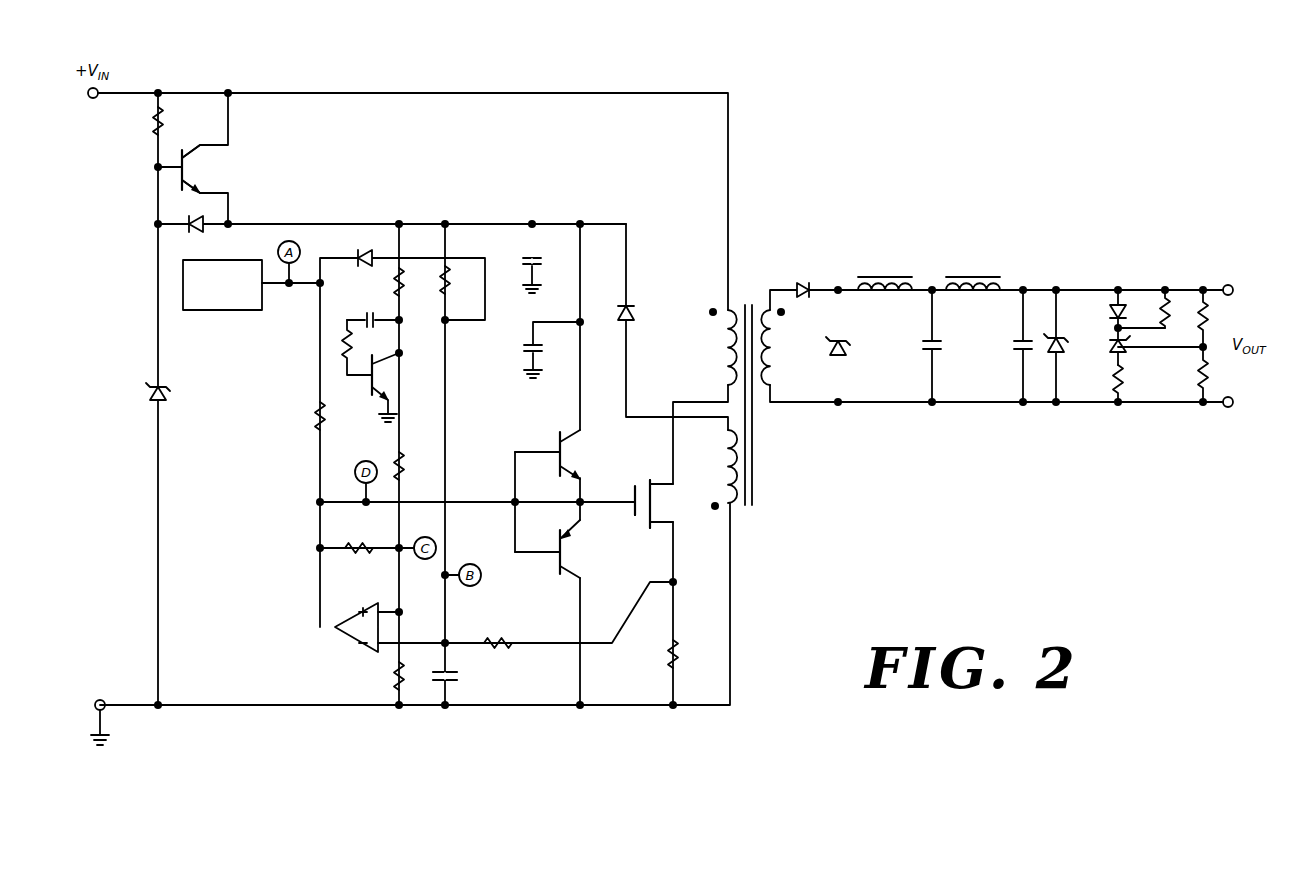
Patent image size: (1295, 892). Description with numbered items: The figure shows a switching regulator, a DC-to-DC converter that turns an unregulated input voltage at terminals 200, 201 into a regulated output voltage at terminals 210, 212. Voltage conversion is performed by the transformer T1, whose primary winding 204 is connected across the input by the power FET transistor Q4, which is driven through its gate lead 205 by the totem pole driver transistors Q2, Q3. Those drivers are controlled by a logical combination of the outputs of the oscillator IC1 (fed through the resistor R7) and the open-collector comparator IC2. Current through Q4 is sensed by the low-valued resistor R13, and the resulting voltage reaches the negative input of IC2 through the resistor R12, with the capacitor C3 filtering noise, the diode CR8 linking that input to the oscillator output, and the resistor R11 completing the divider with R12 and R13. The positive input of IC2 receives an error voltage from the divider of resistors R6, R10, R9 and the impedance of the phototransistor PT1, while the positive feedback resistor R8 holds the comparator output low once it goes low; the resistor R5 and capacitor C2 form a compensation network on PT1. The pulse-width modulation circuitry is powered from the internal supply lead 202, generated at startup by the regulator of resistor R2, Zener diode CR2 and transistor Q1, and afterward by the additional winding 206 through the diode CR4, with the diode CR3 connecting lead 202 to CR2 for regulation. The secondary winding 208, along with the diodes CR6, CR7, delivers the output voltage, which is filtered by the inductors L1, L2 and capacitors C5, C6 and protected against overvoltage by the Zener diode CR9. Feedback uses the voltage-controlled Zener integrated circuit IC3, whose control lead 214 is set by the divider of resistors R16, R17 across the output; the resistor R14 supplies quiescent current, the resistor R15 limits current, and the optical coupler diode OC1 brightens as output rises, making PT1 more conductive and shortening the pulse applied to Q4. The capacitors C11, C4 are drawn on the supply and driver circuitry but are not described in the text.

The input terminal 200 is at (93, 99).
The input terminal 201 is at (100, 700).
The internal supply lead 202 is at (292, 224).
The primary winding 204 is at (728, 352).
The gate lead 205 is at (628, 500).
The additional winding 206 is at (728, 466).
The transformer secondary winding 208 is at (762, 296).
The output voltage terminal 210 is at (1232, 286).
The output voltage terminal 212 is at (1230, 408).
The control lead 214 is at (1170, 352).
The resistor R2 is at (160, 132).
The transistor Q1 is at (193, 169).
The diode CR3 is at (178, 222).
The Zener diode CR2 is at (176, 391).
The oscillator IC1 is at (222, 297).
The diode CR8 is at (355, 250).
The resistor R6 is at (394, 282).
The resistor R11 is at (455, 292).
The capacitor C2 is at (373, 311).
The resistor R5 is at (343, 350).
The phototransistor PT1 is at (382, 382).
The resistor R7 is at (316, 414).
The resistor R10 is at (406, 470).
The positive feedback resistor R8 is at (368, 542).
The comparator IC2 is at (348, 610).
The resistor R9 is at (387, 677).
The capacitor C3 is at (461, 679).
The resistor R12 is at (499, 633).
The capacitor C11 is at (516, 260).
The capacitor C4 is at (552, 350).
The diode CR4 is at (643, 310).
The driver transistor Q2 is at (556, 455).
The driver transistor Q3 is at (556, 549).
The power FET transistor Q4 is at (663, 504).
The resistor R13 is at (682, 660).
The transformer T1 is at (743, 384).
The rectifier diode CR6 is at (795, 280).
The diode CR7 is at (853, 347).
The inductor L1 is at (885, 272).
The inductor L2 is at (973, 272).
The capacitor C5 is at (940, 346).
The capacitor C6 is at (1015, 346).
The Zener diode CR9 is at (1048, 344).
The optical coupler diode OC1 is at (1119, 301).
The integrated circuit IC3 is at (1134, 353).
The resistor R15 is at (1103, 383).
The resistor R14 is at (1172, 308).
The resistor R16 is at (1208, 318).
The resistor R17 is at (1208, 375).